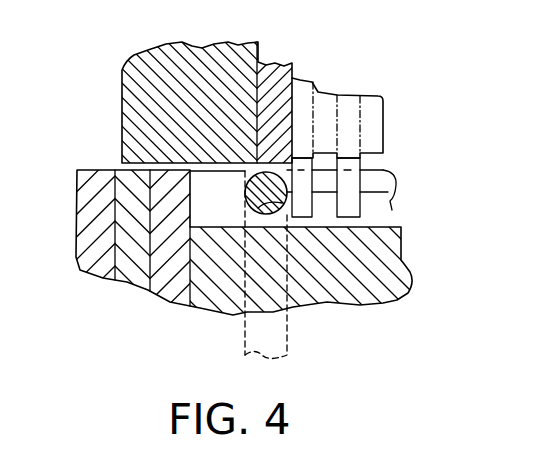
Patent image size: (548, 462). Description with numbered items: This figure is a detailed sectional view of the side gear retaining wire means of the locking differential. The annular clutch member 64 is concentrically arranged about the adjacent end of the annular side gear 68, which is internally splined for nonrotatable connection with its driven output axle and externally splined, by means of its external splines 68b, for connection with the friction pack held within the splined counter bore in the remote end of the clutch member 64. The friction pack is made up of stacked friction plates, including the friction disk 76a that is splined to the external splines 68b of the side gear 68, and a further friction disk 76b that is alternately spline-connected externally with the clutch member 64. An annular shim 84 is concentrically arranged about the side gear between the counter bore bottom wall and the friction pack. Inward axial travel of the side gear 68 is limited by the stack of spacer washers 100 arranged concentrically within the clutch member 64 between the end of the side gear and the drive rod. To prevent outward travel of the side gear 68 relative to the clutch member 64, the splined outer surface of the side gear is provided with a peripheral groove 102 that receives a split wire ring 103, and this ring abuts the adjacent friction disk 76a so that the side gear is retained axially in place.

The clutch member 64 is at (212, 50).
The side gear 68 is at (406, 276).
The external splines 68b is at (385, 212).
The friction disk 76a is at (300, 116).
The second spring leg 76b is at (323, 124).
The annular shim 84 is at (304, 82).
The stack of spacer washers 100 is at (93, 166).
The peripheral groove 102 is at (396, 187).
The split wire ring 103 is at (246, 183).